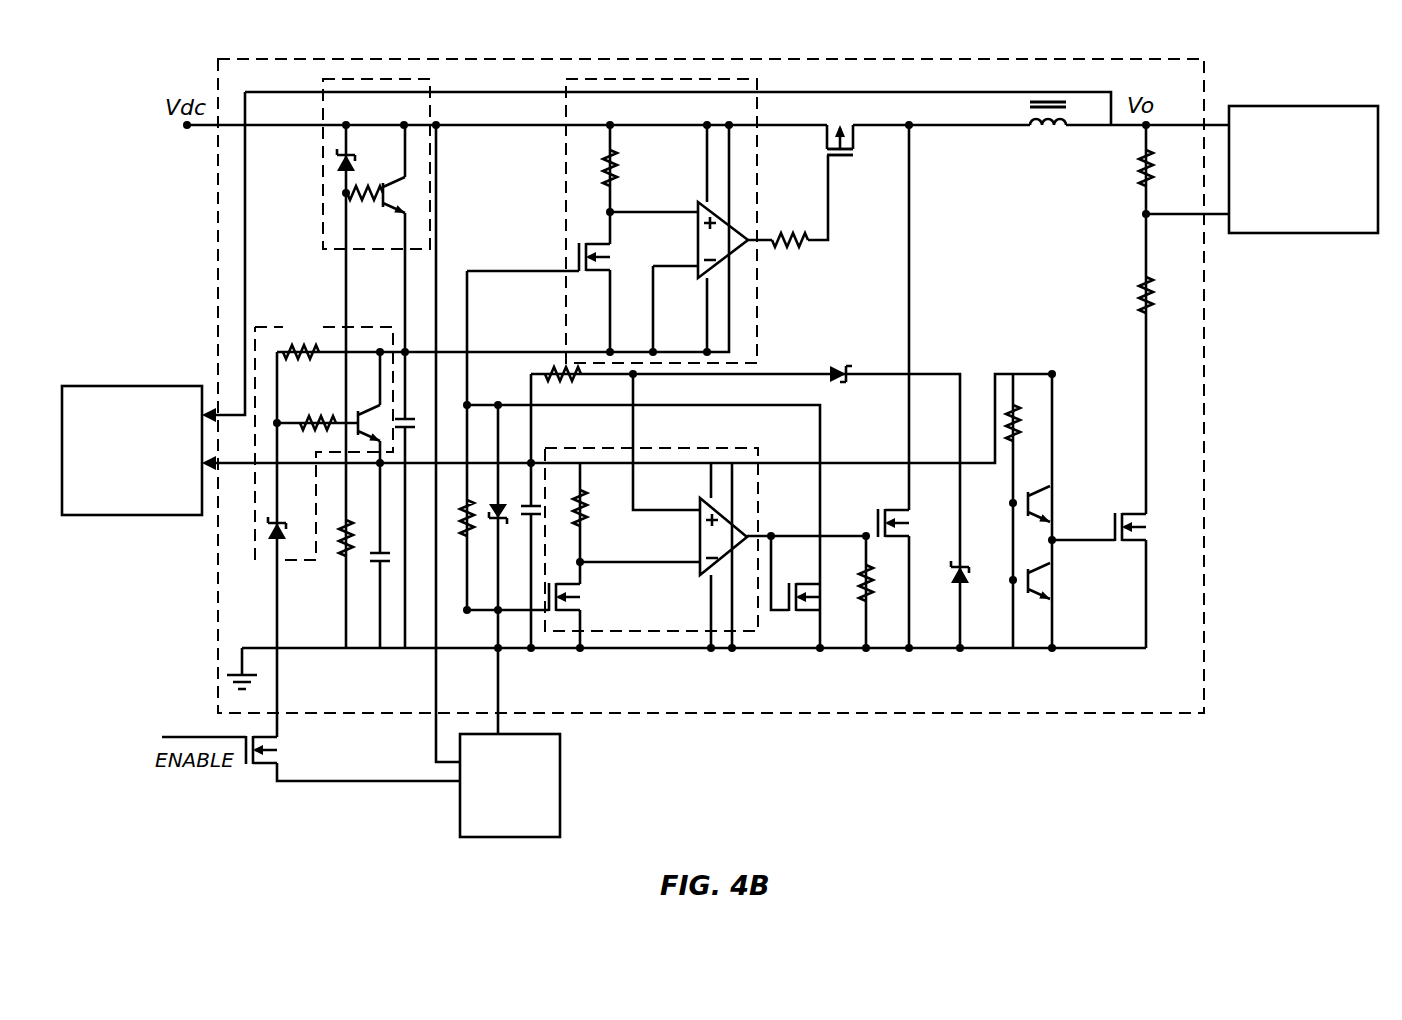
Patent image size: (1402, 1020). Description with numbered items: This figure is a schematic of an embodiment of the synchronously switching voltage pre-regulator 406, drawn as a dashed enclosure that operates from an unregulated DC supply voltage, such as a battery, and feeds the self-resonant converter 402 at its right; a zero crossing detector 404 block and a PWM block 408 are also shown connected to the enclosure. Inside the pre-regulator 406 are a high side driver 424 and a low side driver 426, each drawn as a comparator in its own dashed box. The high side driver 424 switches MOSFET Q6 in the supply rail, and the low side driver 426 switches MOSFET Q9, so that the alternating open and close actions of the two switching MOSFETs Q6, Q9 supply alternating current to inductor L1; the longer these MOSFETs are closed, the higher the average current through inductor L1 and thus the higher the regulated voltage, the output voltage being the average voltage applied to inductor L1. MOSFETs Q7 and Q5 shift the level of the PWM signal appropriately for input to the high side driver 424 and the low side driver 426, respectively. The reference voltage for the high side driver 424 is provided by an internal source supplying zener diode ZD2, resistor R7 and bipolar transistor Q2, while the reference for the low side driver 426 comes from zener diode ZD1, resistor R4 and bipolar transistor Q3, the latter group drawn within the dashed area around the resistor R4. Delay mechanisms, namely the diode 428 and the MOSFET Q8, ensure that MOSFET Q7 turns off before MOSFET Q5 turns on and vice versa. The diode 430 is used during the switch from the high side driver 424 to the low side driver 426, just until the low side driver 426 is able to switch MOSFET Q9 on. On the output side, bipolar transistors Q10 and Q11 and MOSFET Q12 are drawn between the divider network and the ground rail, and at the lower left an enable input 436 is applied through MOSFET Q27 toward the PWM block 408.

The self-resonant converter 402 is at (1305, 106).
The zero crossing detector 404 is at (133, 386).
The synchronously switching voltage pre-regulator 406 is at (1205, 84).
The PWM controller 408 is at (560, 778).
The high side driver 424 is at (760, 305).
The low side driver 426 is at (708, 448).
The diode 428 is at (841, 364).
The diode 430 is at (968, 588).
The enable input 436 is at (247, 737).
The bipolar transistor Q2 is at (404, 195).
The bipolar transistor Q3 is at (378, 423).
The MOSFET Q5 is at (612, 257).
The switching MOSFET Q6 is at (841, 126).
The MOSFET Q7 is at (580, 597).
The MOSFET Q8 is at (821, 597).
The switching MOSFET Q9 is at (912, 523).
The transistor Q10 is at (1060, 504).
The transistor Q11 is at (1060, 581).
The MOSFET Q12 is at (1155, 527).
The MOSFET Q27 is at (287, 751).
The resistor R4 is at (324, 438).
The resistor R7 is at (365, 209).
The zener diode ZD1 is at (298, 544).
The zener diode ZD2 is at (376, 164).
The inductor L1 is at (1048, 139).